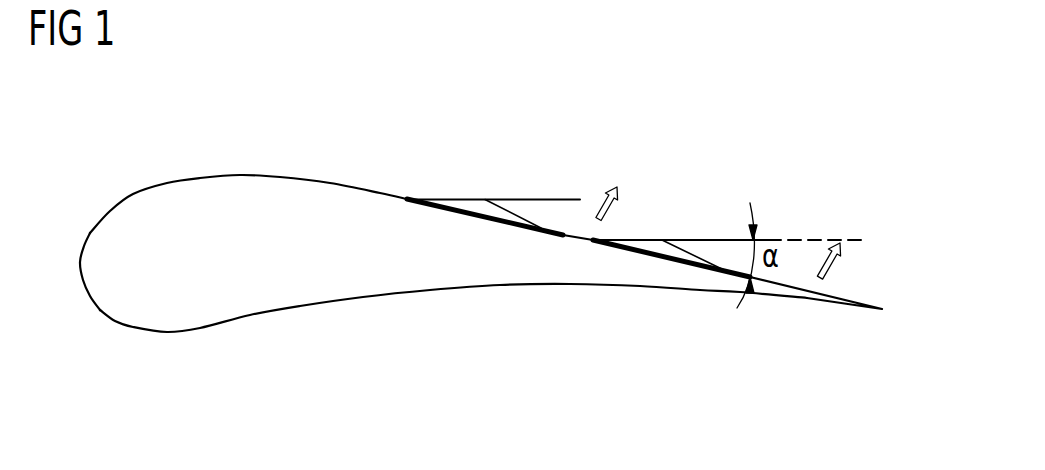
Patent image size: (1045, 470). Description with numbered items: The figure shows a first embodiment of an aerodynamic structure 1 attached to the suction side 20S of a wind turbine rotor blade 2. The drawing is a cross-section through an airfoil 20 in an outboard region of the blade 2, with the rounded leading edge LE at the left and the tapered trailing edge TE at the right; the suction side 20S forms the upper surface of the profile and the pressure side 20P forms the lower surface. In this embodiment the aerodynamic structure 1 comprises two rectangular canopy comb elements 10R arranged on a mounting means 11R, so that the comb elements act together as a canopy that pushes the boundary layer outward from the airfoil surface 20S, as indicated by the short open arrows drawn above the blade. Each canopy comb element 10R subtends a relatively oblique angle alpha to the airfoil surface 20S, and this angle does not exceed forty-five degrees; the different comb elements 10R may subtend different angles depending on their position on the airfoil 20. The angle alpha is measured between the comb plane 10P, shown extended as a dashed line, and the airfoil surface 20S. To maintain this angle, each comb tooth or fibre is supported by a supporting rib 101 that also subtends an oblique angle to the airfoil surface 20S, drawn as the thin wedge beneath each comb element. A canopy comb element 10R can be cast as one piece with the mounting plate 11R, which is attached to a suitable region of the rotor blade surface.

The aerodynamic structure 1 is at (672, 112).
The wind turbine rotor blade 2 is at (133, 173).
The airfoil 20 is at (320, 197).
The suction side 20S is at (250, 174).
The pressure side 20P is at (260, 318).
The leading edge LE is at (80, 272).
The trailing edge TE is at (882, 310).
The rectangular canopy comb element 10R is at (563, 198).
The mounting means 11R is at (408, 198).
The comb plane 10P is at (810, 240).
The supporting rib 101 is at (522, 218).